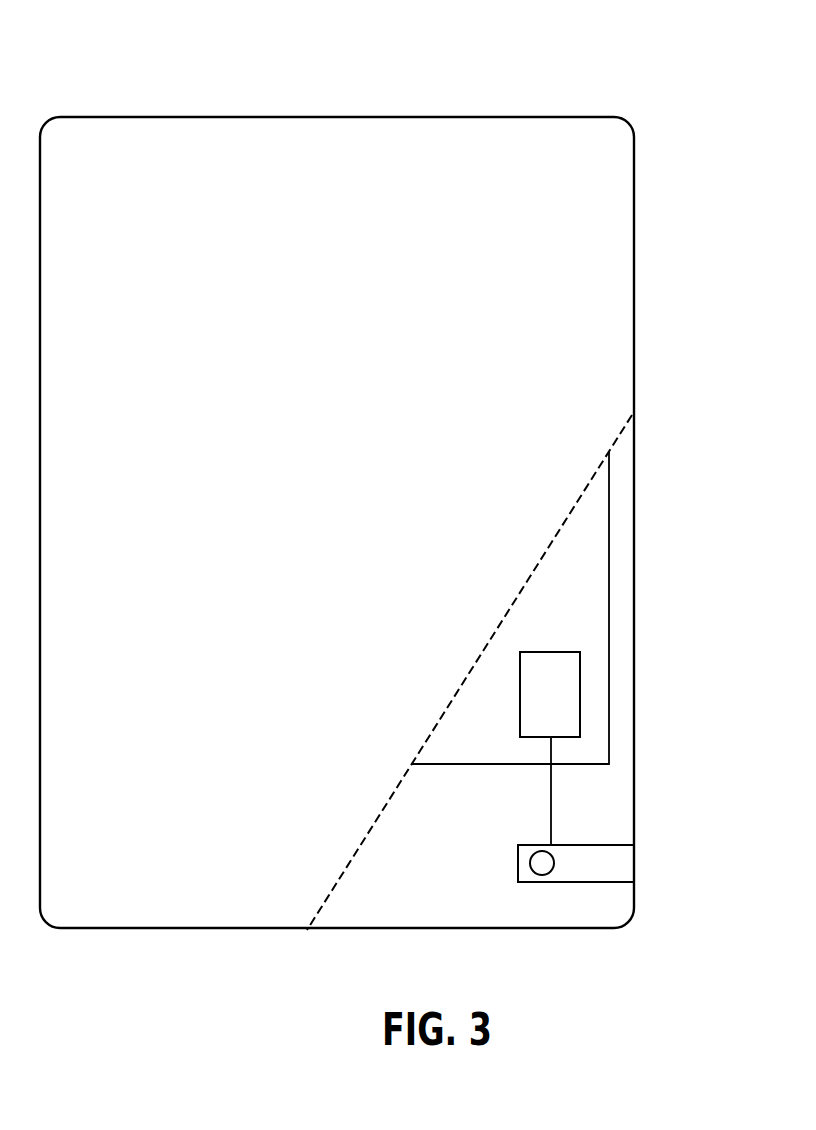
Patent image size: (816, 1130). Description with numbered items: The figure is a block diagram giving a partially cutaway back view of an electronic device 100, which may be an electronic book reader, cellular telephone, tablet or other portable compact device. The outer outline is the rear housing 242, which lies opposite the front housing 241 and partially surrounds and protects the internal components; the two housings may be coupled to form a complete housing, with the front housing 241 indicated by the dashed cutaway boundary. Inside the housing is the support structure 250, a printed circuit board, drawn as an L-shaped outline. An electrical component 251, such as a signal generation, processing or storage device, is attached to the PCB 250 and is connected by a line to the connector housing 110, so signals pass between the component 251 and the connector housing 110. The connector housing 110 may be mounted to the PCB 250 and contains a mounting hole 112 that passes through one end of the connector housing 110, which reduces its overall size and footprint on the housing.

The electronic device 100 is at (384, 477).
The rear housing 242 is at (384, 522).
The front housing 241 is at (620, 460).
The support structure 250 is at (610, 552).
The electrical component 251 is at (580, 681).
The connector housing 110 is at (518, 860).
The mounting hole 112 is at (554, 862).